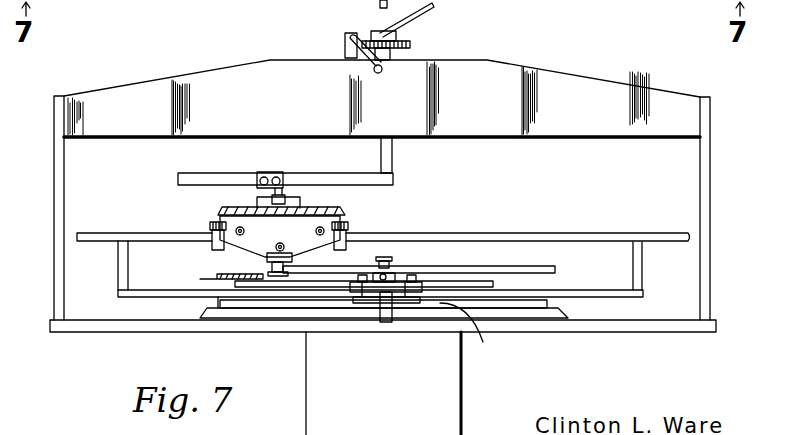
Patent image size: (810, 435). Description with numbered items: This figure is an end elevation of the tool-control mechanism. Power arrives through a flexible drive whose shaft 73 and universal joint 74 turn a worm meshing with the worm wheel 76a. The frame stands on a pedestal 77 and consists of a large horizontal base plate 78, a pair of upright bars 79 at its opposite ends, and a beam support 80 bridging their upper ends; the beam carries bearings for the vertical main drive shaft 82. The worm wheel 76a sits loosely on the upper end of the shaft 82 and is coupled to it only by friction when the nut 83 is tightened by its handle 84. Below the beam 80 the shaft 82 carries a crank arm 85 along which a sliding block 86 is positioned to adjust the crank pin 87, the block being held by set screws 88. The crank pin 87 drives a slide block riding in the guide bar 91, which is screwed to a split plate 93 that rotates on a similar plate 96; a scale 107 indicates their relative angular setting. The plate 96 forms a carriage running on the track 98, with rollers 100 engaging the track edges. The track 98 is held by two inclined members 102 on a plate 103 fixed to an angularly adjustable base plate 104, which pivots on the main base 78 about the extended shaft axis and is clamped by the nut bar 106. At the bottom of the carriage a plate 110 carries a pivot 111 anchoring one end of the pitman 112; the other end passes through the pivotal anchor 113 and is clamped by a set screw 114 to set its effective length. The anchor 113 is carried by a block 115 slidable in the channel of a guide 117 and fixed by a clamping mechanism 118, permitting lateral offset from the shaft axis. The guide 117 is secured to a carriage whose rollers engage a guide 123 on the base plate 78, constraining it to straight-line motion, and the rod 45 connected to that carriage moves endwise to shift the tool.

The rod 45 is at (381, 283).
The shaft 73 is at (370, 74).
The universal joint 74 is at (350, 43).
The worm wheel 76a is at (410, 45).
The pedestal 77 is at (463, 384).
The base plate 78 is at (661, 331).
The upright bars 79 is at (55, 210).
The beam support 80 is at (605, 90).
The main drive shaft 82 is at (396, 152).
The nut 83 is at (378, 32).
The handle 84 is at (434, 12).
The crank arm 85 is at (345, 175).
The sliding block 86 is at (268, 172).
The crank pin 87 is at (290, 194).
The set screws 88 is at (258, 178).
The guide bar 91 is at (258, 200).
The plate 93 is at (345, 212).
The plate 96 is at (258, 238).
The track or guide 98 is at (562, 234).
The rollers 100 is at (212, 233).
The supporting members 102 is at (117, 264).
The base plate 103 is at (580, 291).
The angularly adjustable base plate 104 is at (547, 318).
The nut bar 106 is at (477, 329).
The scale 107 is at (304, 219).
The plate 110 is at (265, 256).
The pivot 111 is at (280, 273).
The pitman 112 is at (490, 267).
The pivotal anchor 113 is at (393, 270).
The set screw 114 is at (384, 262).
The block 115 is at (310, 281).
The guide 117 is at (322, 286).
The clamping mechanism 118 is at (216, 276).
The guide 123 is at (395, 290).